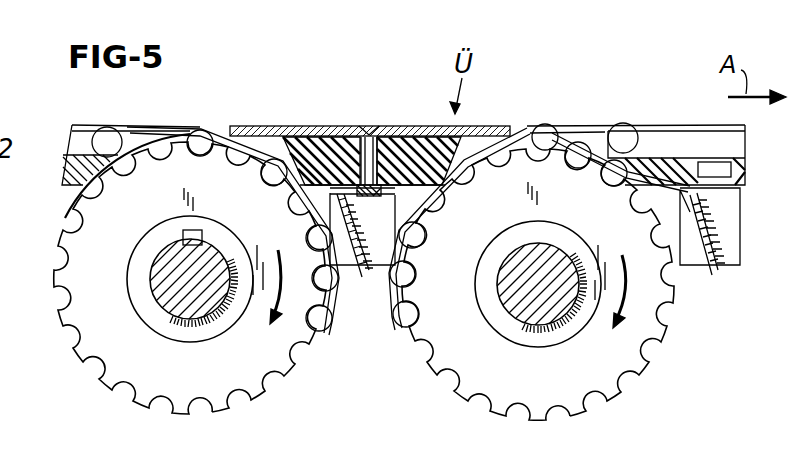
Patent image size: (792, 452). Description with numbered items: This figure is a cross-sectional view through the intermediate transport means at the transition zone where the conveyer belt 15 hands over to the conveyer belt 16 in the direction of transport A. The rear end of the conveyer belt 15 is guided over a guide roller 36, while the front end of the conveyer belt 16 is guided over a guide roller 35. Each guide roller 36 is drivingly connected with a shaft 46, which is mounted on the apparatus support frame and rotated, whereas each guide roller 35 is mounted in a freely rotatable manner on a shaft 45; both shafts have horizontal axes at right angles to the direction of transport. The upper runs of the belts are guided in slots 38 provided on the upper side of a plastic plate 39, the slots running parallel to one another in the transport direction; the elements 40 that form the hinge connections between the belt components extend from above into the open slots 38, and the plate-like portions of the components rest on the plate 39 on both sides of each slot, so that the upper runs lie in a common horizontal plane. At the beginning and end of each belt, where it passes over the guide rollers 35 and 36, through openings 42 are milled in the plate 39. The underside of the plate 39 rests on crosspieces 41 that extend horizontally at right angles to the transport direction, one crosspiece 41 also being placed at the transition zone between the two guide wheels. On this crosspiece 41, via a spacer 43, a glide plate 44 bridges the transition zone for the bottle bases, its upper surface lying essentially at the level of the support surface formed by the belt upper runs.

The conveyer belt 15 is at (132, 125).
The conveyer belt 16 is at (650, 125).
The guide roller 35 is at (598, 170).
The guide roller 36 is at (172, 167).
The slot 38 is at (80, 140).
The plastic plate 39 is at (748, 177).
The hinge connection element 40 is at (200, 140).
The crosspiece 41 is at (364, 272).
The through opening 42 is at (307, 160).
The spacer 43 is at (341, 130).
The glide plate 44 is at (486, 127).
The shaft 45 is at (535, 310).
The shaft 46 is at (170, 313).